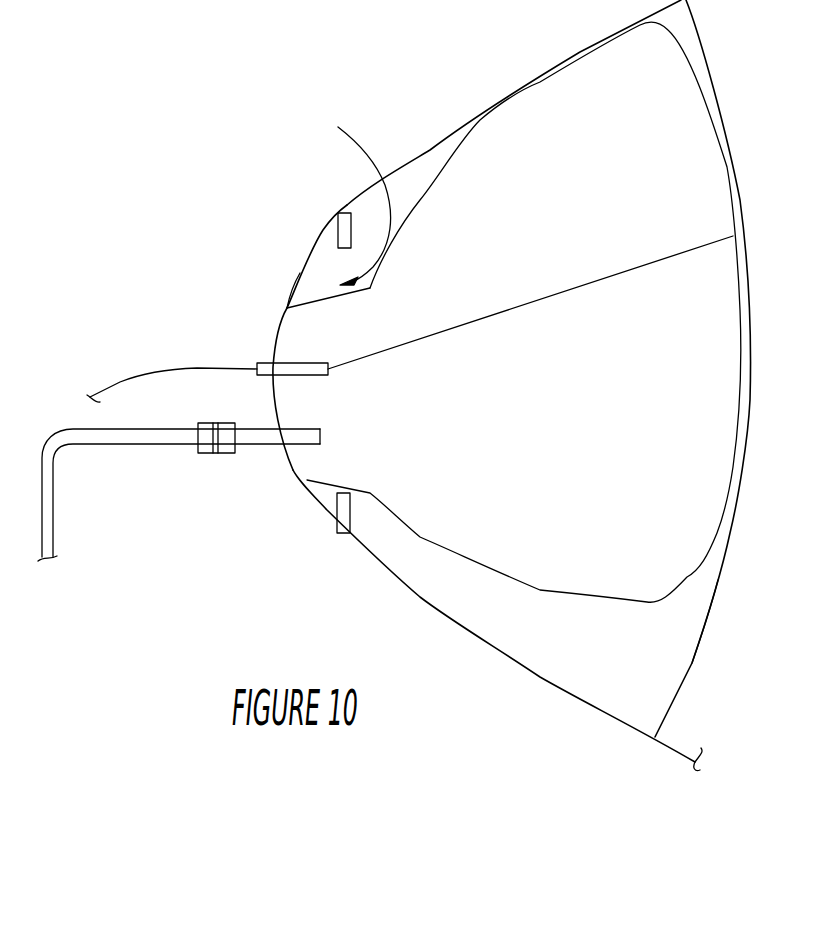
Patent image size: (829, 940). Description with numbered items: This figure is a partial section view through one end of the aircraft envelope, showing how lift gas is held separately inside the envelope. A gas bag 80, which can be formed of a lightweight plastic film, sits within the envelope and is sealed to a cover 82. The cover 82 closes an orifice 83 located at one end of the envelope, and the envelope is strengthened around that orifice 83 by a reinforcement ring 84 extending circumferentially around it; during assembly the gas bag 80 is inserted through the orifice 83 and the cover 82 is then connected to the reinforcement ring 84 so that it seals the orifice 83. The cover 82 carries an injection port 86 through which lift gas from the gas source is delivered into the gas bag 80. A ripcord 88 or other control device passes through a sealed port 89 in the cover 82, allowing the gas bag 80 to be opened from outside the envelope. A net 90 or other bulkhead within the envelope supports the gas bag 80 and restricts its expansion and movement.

The gas bag 80 is at (425, 546).
The cover 82 is at (300, 272).
The orifice 83 is at (354, 192).
The reinforcement ring 84 is at (344, 214).
The injection port 86 is at (223, 446).
The ripcord 88 is at (205, 370).
The sealed port 89 is at (263, 363).
The net 90 is at (692, 664).